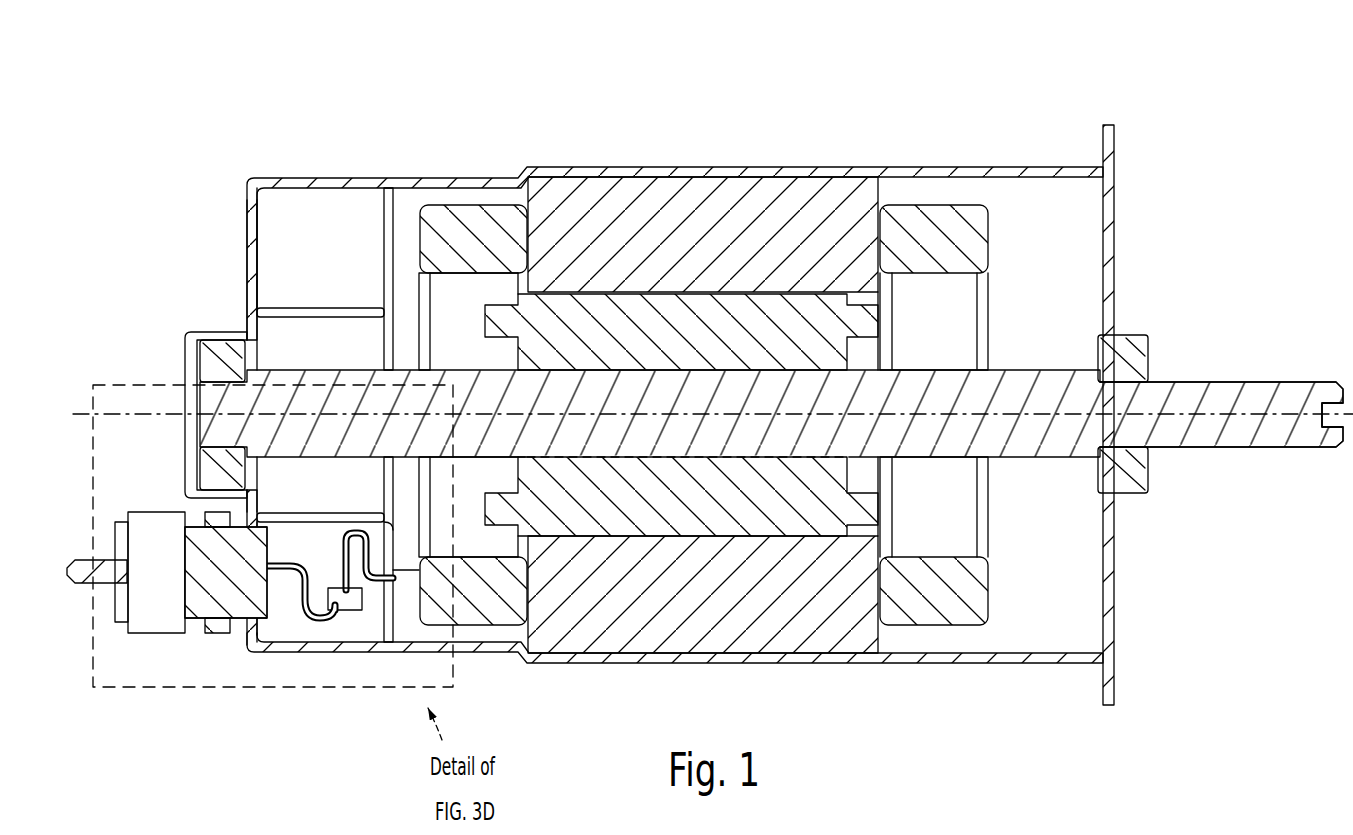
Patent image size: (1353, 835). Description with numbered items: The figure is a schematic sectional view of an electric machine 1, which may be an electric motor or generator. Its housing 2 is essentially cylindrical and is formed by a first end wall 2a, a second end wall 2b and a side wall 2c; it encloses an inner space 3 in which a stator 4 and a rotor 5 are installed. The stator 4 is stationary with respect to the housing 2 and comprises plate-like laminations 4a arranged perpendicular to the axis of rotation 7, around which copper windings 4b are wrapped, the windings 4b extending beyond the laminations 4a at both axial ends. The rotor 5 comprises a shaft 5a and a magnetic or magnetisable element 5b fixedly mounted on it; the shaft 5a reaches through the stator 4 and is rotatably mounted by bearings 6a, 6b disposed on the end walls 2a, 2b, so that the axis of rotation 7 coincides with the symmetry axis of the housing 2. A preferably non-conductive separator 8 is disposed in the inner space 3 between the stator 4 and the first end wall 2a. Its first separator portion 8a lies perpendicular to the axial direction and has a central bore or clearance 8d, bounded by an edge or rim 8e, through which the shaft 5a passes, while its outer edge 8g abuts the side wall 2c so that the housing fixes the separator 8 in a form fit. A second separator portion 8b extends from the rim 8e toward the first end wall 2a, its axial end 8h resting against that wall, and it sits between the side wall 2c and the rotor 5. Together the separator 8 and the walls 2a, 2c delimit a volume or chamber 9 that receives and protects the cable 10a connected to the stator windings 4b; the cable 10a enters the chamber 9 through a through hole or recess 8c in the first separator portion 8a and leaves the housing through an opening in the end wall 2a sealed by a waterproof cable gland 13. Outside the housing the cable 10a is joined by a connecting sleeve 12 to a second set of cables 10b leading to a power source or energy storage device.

The electric machine 1 is at (993, 78).
The housing 2 is at (922, 663).
The first end wall 2a is at (245, 252).
The second end wall 2b is at (1114, 562).
The side wall 2c is at (712, 168).
The inner space 3 is at (1060, 288).
The stator 4 is at (835, 135).
The laminations 4a is at (627, 215).
The windings 4b is at (487, 225).
The rotor 5 is at (1040, 465).
The shaft 5a is at (1181, 385).
The magnetic or magnetisable element 5b is at (742, 520).
The bearing 6a is at (185, 318).
The bearing 6b is at (1152, 308).
The axis of rotation 7 is at (1241, 433).
The separator 8 is at (385, 205).
The first separator portion 8a is at (393, 282).
The second separator portion 8b is at (302, 315).
The through hole or recess 8c is at (400, 597).
The central bore or clearance 8d is at (455, 368).
The edge or rim 8e is at (437, 492).
The outer edge 8g is at (388, 186).
The axial end 8h is at (247, 315).
The volume or chamber 9 is at (302, 220).
The cable 10a is at (343, 560).
The second set of cables 10b is at (270, 575).
The connecting sleeve 12 is at (352, 612).
The cable gland 13 is at (170, 652).